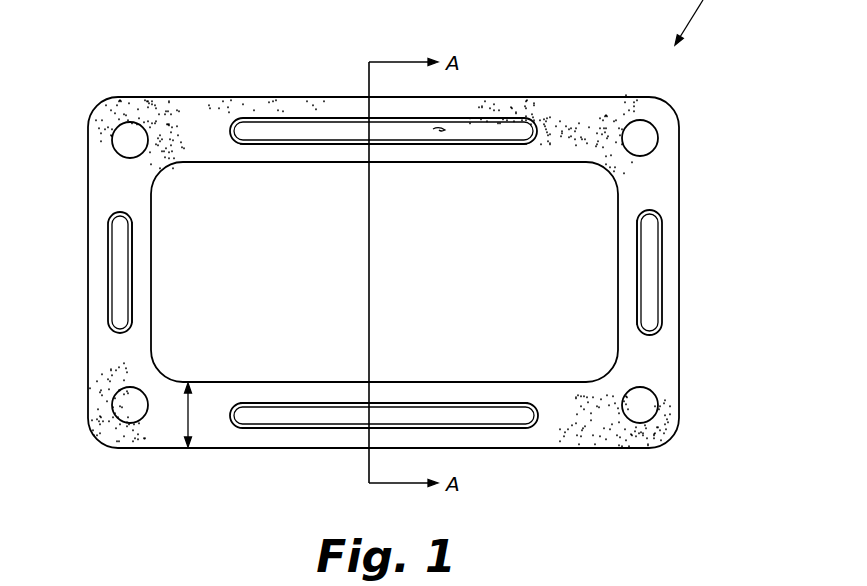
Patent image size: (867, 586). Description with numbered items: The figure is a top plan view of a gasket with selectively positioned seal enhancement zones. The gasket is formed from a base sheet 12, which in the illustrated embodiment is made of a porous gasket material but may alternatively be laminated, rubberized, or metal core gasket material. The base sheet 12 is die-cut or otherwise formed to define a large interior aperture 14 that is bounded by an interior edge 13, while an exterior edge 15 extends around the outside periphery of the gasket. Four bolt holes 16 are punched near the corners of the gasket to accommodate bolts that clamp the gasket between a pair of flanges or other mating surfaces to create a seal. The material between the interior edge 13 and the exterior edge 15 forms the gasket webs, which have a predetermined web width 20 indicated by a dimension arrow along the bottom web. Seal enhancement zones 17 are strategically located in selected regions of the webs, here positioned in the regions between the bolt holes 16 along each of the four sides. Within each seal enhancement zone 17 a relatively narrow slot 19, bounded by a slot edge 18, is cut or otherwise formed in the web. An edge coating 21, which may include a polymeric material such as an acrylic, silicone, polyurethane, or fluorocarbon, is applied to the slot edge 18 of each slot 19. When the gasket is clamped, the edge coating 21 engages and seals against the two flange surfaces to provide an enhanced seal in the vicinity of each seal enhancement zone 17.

The base sheet 12 is at (580, 108).
The interior edge 13 is at (543, 165).
The interior aperture 14 is at (441, 302).
The exterior edge 15 is at (527, 448).
The bolt holes 16 is at (657, 148).
The seal enhancement zones 17 is at (255, 102).
The slot edge 18 is at (306, 118).
The slot 19 is at (440, 133).
The web width 20 is at (185, 420).
The edge coating 21 is at (330, 142).